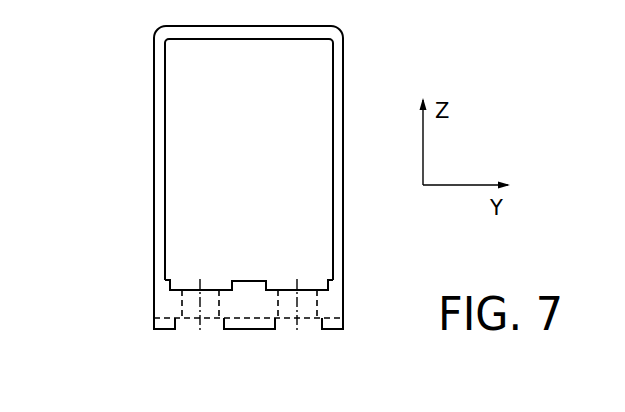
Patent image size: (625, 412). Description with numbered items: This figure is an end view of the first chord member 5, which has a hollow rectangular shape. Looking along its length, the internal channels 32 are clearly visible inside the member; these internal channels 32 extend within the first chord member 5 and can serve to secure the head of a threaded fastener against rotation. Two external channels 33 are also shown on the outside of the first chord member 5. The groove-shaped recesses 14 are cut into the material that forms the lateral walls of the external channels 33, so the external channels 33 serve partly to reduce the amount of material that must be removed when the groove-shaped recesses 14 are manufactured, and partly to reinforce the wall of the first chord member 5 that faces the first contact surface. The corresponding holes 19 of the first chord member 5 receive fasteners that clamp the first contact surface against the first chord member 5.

The first chord member 5 is at (108, 112).
The groove-shaped recesses 14 is at (162, 326).
The corresponding holes 19 is at (182, 305).
The internal channels 32 is at (192, 287).
The external channels 33 is at (192, 325).